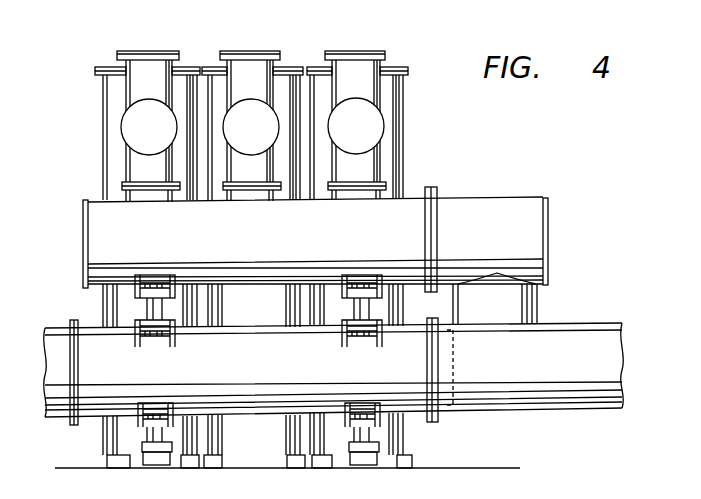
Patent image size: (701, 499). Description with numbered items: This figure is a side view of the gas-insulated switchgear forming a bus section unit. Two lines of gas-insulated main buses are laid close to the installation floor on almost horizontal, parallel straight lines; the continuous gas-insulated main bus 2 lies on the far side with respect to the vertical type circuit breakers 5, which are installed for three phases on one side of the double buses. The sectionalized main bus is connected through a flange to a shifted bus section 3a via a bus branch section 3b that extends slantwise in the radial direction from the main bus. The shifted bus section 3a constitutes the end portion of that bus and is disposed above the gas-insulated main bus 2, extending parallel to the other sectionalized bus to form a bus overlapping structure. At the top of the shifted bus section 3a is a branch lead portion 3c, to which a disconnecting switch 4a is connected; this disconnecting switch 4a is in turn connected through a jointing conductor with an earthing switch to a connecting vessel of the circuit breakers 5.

The gas-insulated main bus 2 is at (605, 322).
The shifted bus section 3a is at (92, 202).
The bus branch section 3b is at (533, 300).
The branch lead portion 3c is at (127, 200).
The disconnecting switch 4a is at (266, 51).
The vertical type circuit breaker 5 is at (403, 84).